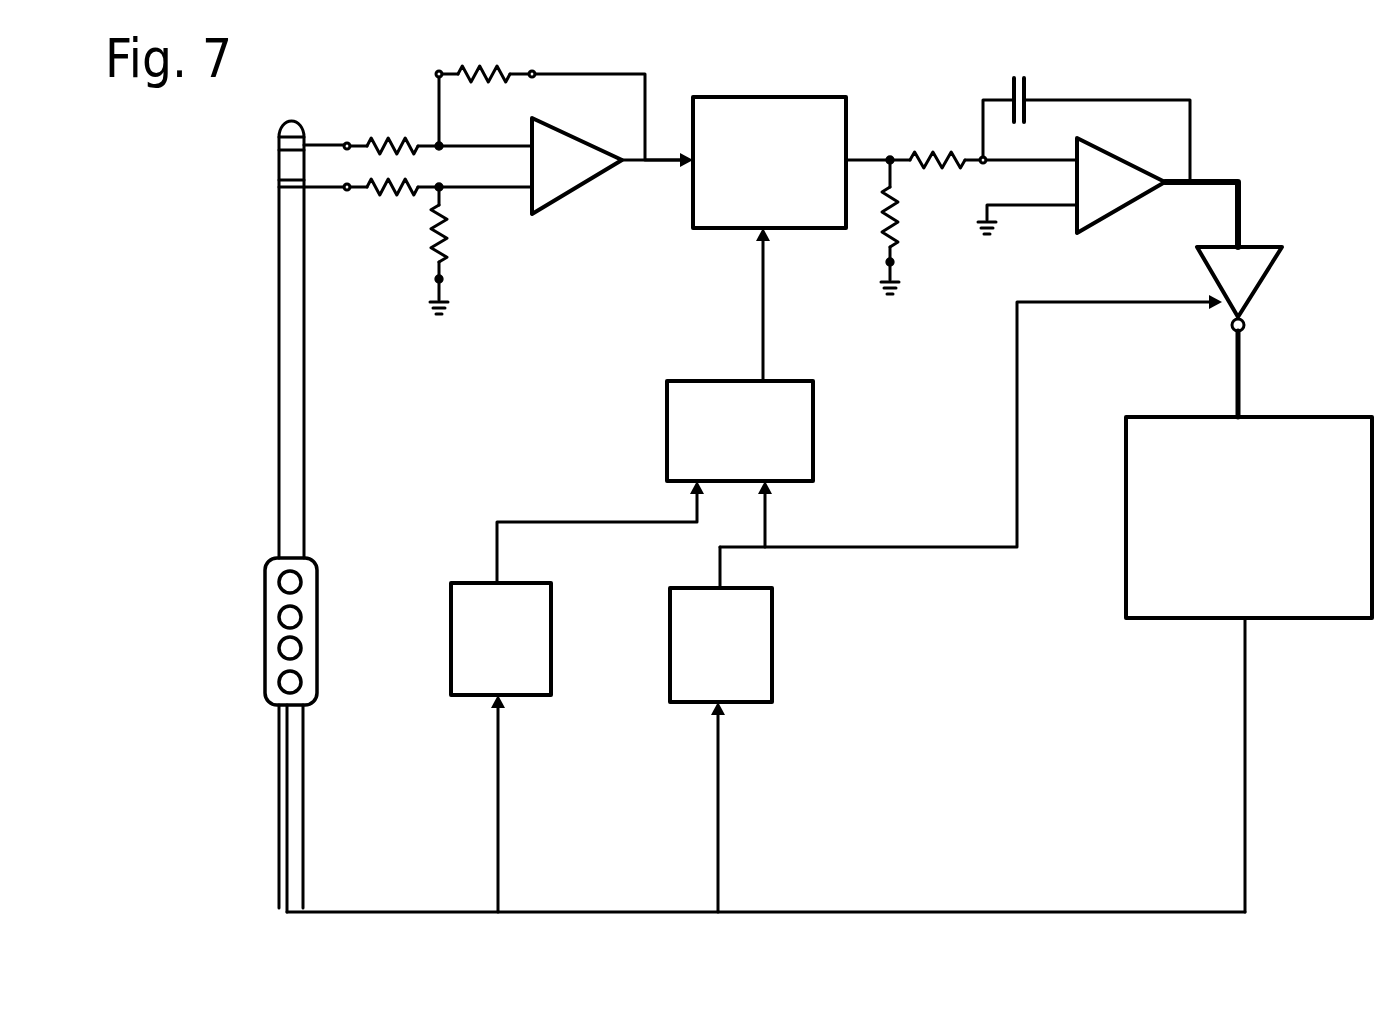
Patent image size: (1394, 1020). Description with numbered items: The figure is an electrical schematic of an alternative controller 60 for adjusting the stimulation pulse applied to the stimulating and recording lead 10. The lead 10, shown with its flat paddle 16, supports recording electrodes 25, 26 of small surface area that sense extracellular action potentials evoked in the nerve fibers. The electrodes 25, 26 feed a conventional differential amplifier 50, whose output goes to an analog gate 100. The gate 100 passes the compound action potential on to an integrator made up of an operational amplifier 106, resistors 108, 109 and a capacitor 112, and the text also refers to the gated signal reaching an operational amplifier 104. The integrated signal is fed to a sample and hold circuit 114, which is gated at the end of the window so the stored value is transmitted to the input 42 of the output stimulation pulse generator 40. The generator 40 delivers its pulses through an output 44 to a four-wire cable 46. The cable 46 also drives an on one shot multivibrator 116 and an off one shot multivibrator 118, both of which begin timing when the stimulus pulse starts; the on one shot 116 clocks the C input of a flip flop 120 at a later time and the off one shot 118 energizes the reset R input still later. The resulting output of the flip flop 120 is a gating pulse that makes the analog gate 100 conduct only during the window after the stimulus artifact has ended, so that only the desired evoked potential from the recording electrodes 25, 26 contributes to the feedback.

The stimulating and recording lead 10 is at (318, 424).
The recording electrode 25 is at (304, 130).
The recording electrode 26 is at (305, 188).
The flat paddle 16 is at (313, 568).
The differential amplifier 50 is at (563, 258).
The analog gate 100 is at (781, 97).
The resistor 108 is at (957, 157).
The resistor 109 is at (888, 240).
The capacitor 112 is at (1032, 84).
The operational amplifier 106 is at (1140, 195).
The controller 60 is at (1225, 145).
The sample and hold circuit 114 is at (1207, 270).
The operational amplifier 104 is at (1066, 264).
The input 42 is at (1234, 412).
The output stimulation pulse generator 40 is at (1124, 485).
The output 44 is at (1242, 623).
The four-wire cable 46 is at (997, 892).
The flip flop 120 is at (813, 425).
The on one shot multivibrator 116 is at (537, 700).
The off one shot multivibrator 118 is at (773, 648).